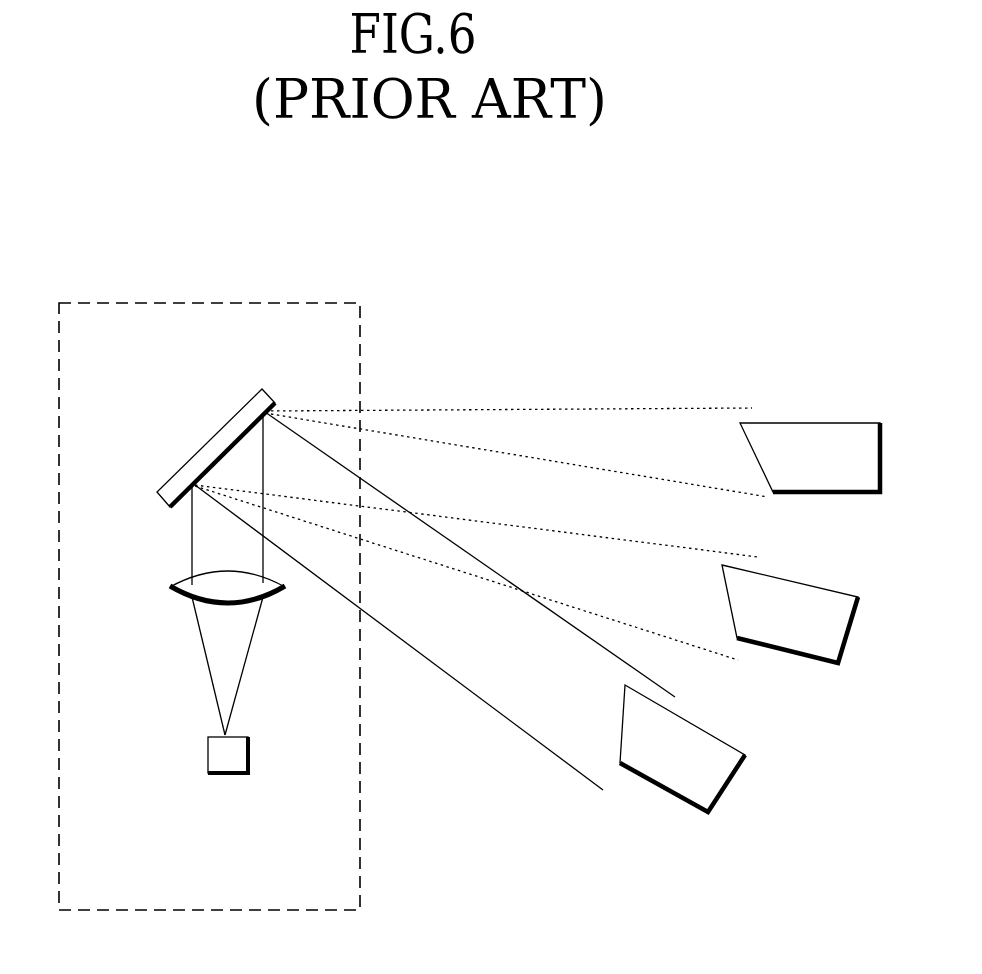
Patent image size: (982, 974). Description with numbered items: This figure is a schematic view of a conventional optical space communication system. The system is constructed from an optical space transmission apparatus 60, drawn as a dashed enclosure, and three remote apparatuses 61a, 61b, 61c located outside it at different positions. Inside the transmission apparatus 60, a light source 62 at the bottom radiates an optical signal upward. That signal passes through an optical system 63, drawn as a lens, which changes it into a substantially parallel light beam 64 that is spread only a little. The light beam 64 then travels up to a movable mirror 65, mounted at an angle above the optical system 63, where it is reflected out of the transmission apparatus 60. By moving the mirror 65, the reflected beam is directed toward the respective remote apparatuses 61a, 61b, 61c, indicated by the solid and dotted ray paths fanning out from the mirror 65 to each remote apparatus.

The optical space transmission apparatus 60 is at (318, 309).
The remote apparatus 61a is at (663, 778).
The remote apparatus 61b is at (802, 647).
The remote apparatus 61c is at (825, 427).
The light source 62 is at (231, 763).
The optical system 63 is at (177, 590).
The light beam 64 is at (200, 541).
The movable mirror 65 is at (243, 413).